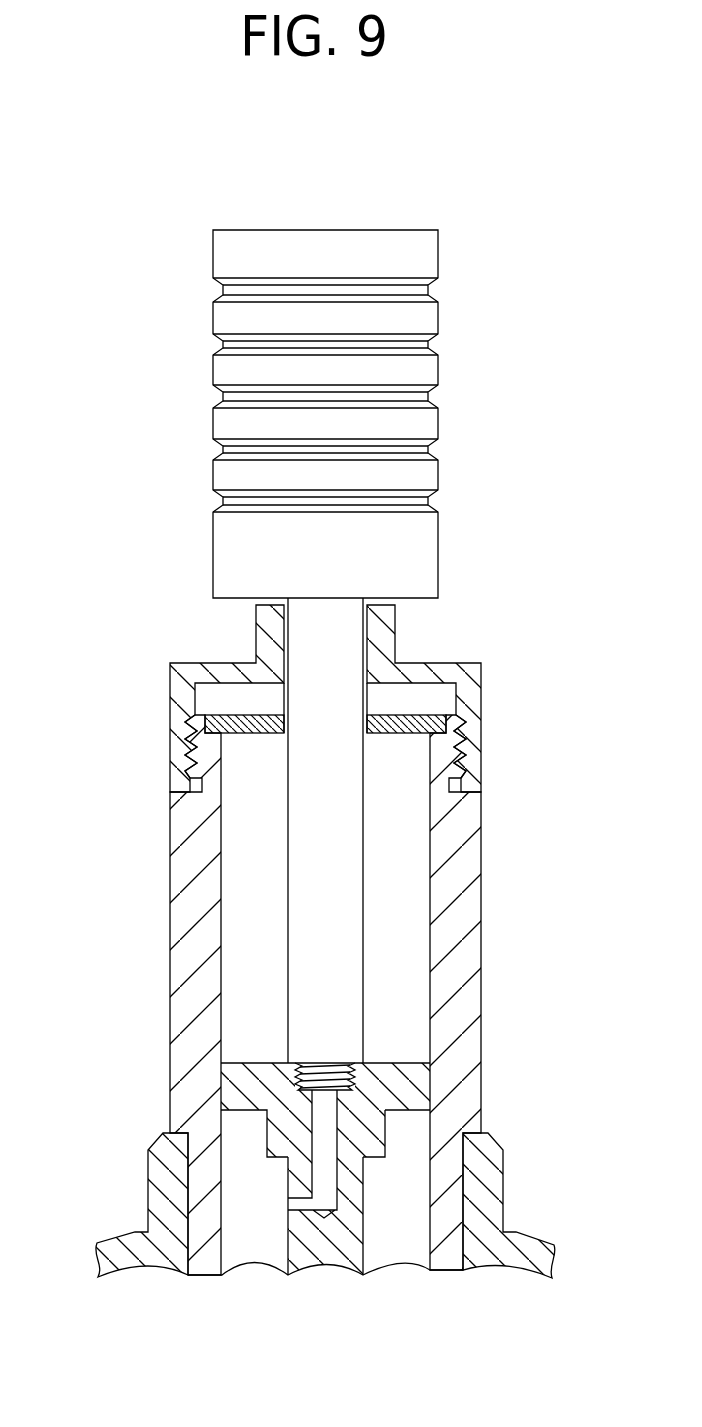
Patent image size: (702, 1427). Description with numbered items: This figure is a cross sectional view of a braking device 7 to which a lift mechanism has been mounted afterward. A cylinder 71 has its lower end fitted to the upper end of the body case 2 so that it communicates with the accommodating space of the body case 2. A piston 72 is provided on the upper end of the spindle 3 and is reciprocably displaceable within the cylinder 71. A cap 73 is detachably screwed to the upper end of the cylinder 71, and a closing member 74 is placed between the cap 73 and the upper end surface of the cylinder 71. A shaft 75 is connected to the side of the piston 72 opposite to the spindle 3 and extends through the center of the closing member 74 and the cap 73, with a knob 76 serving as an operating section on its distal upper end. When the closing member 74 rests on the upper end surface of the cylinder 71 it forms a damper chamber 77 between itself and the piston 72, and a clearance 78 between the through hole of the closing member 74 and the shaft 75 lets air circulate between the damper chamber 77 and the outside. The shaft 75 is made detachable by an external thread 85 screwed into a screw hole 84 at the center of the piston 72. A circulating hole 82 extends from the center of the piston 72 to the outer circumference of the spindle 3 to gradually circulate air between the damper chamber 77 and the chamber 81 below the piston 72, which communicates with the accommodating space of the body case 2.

The braking device 7 is at (125, 530).
The knob 76 is at (430, 319).
The shaft 75 is at (347, 872).
The cap 73 is at (463, 670).
The cylinder 71 is at (482, 957).
The closing member 74 is at (428, 702).
The clearance 78 is at (365, 735).
The damper chamber 77 is at (233, 962).
The piston 72 is at (412, 1100).
The screw hole 84 is at (355, 1076).
The external thread 85 is at (327, 1068).
The spindle 3 is at (323, 1273).
The circulating hole 82 is at (323, 1174).
The chamber 81 is at (253, 1268).
The body case 2 is at (102, 1263).